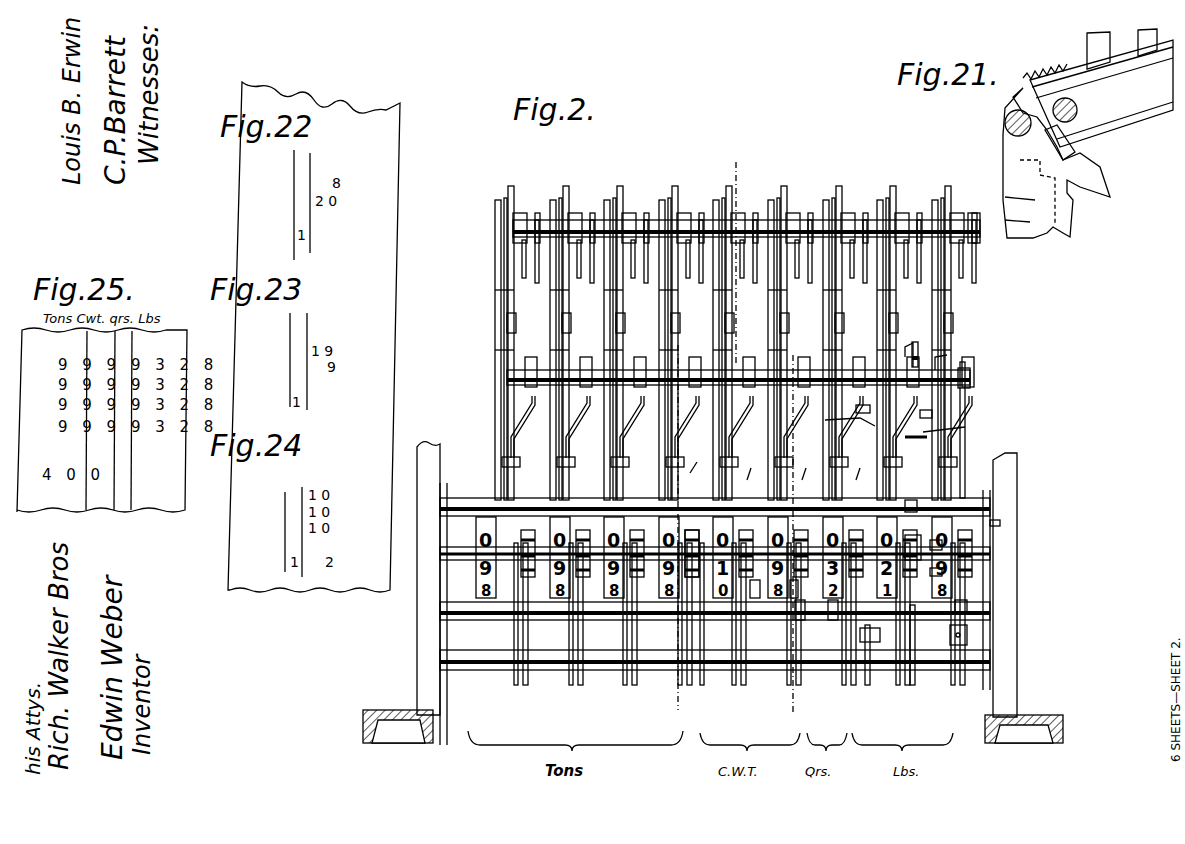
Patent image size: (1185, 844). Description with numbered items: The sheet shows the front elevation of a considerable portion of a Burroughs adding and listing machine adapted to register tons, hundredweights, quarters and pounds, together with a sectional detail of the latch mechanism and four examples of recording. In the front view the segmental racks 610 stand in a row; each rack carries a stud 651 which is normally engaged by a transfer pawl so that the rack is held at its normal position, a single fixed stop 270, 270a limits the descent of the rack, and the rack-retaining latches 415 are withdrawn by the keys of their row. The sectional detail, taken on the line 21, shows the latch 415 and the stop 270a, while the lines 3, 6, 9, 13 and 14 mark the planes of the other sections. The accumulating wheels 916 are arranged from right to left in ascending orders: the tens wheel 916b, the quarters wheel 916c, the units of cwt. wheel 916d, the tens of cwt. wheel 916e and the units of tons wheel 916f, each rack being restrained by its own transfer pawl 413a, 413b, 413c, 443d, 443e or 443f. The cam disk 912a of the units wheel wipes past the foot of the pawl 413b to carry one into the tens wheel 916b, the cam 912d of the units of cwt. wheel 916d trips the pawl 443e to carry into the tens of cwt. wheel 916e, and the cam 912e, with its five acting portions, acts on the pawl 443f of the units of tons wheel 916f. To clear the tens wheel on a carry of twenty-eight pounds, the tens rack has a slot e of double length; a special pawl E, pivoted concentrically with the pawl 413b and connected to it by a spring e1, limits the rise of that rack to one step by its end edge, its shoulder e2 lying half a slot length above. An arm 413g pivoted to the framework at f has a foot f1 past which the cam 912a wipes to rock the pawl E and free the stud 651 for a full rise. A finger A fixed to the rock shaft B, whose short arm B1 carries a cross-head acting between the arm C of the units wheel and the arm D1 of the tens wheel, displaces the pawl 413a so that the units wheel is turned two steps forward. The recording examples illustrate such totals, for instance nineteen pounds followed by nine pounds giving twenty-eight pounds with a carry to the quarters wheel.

In FIG. 2, the segmental rack 610 is at (547, 408).
In FIG. 2, the rack stud 651 is at (565, 468).
In FIG. 2, the pawl arm 270 is at (712, 326).
In FIG. 21, the fixed stop 270a is at (1020, 202).
In FIG. 21, the rack-retaining latch 415 is at (1043, 147).
In FIG. 2, the section line 21— 21 is at (732, 155).
In FIG. 2, the section line 14— 14 is at (688, 357).
In FIG. 2, the section line 13— 13 is at (796, 366).
In FIG. 2, the section line 9— 9 is at (883, 718).
In FIG. 2, the section line 3— 3 is at (922, 409).
In FIG. 2, the section line 6— 6 is at (866, 411).
In FIG. 2, the special pawl E is at (890, 418).
In FIG. 2, the spring e1 is at (947, 355).
In FIG. 2, the transfer pawl of units wheel 413a is at (960, 398).
In FIG. 2, the transfer pawl of tens wheel 413b is at (947, 413).
In FIG. 2, the pivot f is at (965, 427).
In FIG. 2, the arm 413g is at (927, 437).
In FIG. 2, the transfer pawl of units of tons wheel 443f is at (683, 481).
In FIG. 2, the transfer pawl of tens of cwt. wheel 443e is at (739, 484).
In FIG. 2, the transfer pawl of units of cwt. wheel 443d is at (796, 484).
In FIG. 2, the transfer pawl of quarters wheel 413c is at (851, 484).
In FIG. 2, the tens wheel 916b is at (920, 507).
In FIG. 2, the accumulating wheel 916 is at (913, 548).
In FIG. 2, the shoulder e2 is at (1000, 518).
In FIG. 2, the slot e is at (940, 545).
In FIG. 2, the foot f1 is at (940, 573).
In FIG. 2, the finger A is at (967, 592).
In FIG. 2, the cam disk of units wheel 912a is at (967, 612).
In FIG. 2, the rock shaft B is at (967, 633).
In FIG. 2, the arm C is at (913, 640).
In FIG. 2, the short arm B1 is at (867, 640).
In FIG. 2, the arm D1 is at (868, 642).
In FIG. 2, the units of tons wheel 916f is at (650, 607).
In FIG. 2, the cam of tens of cwt. wheel 912e is at (690, 577).
In FIG. 2, the tens of cwt. wheel 916e is at (753, 597).
In FIG. 2, the cam of units of cwt. wheel 912d is at (790, 597).
In FIG. 2, the units of cwt. wheel 916d is at (800, 622).
In FIG. 2, the quarters wheel 916c is at (833, 627).